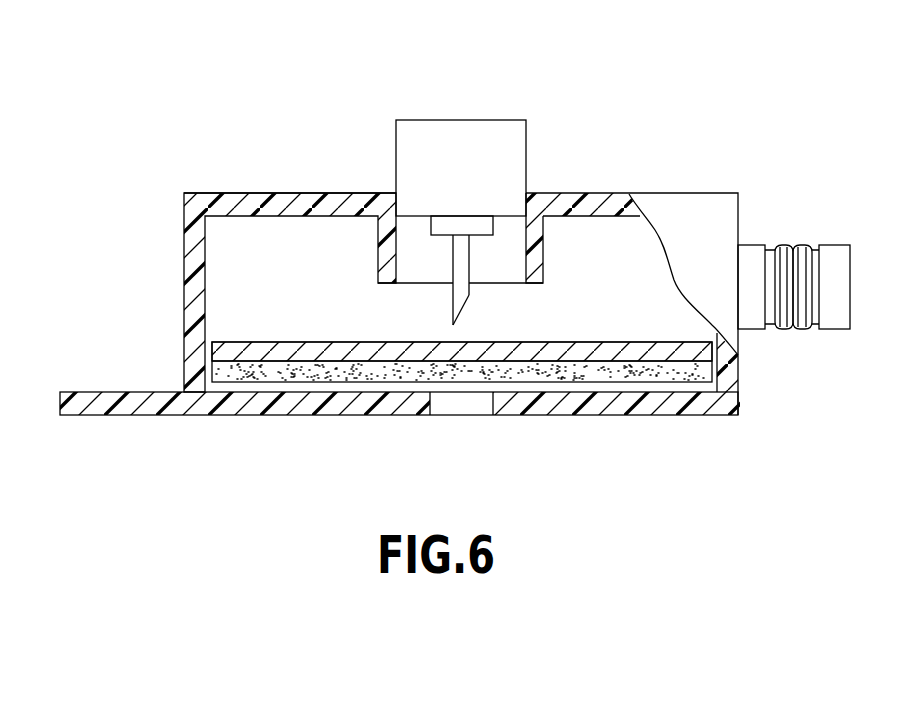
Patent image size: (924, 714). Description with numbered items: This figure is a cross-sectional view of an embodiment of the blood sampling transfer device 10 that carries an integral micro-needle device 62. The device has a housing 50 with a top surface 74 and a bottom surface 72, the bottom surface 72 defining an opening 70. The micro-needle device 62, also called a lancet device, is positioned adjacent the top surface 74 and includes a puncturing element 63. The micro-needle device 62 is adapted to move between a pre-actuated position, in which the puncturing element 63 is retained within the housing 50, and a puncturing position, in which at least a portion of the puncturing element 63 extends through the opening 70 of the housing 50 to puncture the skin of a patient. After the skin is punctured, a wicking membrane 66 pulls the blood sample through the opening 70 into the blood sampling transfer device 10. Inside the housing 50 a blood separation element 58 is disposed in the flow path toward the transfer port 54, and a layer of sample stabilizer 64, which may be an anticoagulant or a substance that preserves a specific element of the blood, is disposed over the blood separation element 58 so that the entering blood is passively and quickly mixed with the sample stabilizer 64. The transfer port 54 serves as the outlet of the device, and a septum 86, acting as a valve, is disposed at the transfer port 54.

The blood sampling transfer device 10 is at (162, 92).
The housing 50 is at (184, 240).
The transfer port 54 is at (830, 245).
The blood separation element 58 is at (260, 342).
The micro-needle device 62 is at (469, 262).
The puncturing element 63 is at (453, 325).
The layer of sample stabilizer 64 is at (225, 362).
The wicking membrane 66 is at (663, 370).
The opening 70 is at (443, 428).
The bottom surface 72 is at (290, 415).
The top surface 74 is at (270, 193).
The septum 86 is at (785, 211).